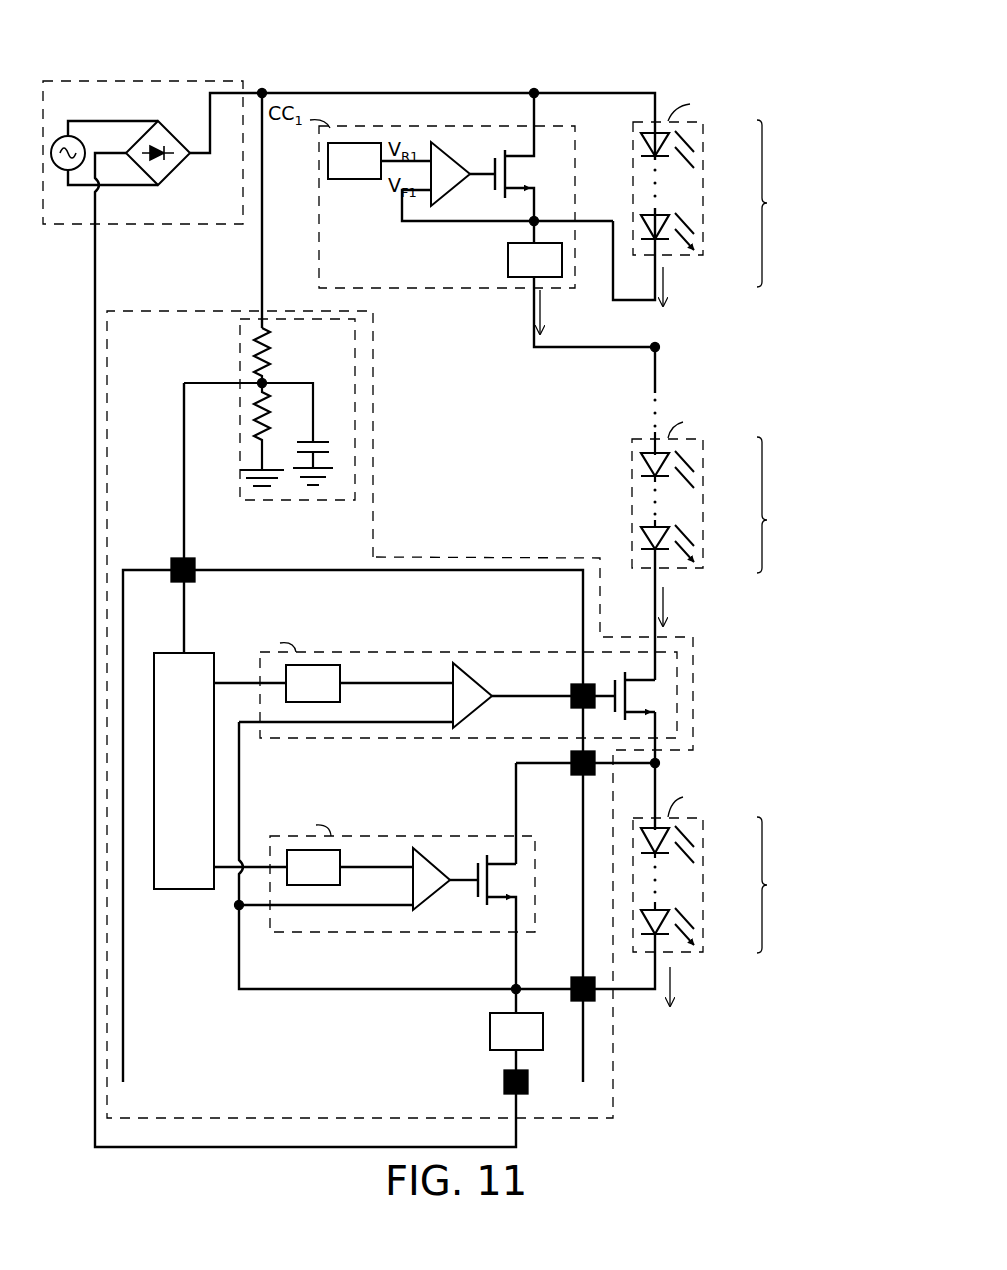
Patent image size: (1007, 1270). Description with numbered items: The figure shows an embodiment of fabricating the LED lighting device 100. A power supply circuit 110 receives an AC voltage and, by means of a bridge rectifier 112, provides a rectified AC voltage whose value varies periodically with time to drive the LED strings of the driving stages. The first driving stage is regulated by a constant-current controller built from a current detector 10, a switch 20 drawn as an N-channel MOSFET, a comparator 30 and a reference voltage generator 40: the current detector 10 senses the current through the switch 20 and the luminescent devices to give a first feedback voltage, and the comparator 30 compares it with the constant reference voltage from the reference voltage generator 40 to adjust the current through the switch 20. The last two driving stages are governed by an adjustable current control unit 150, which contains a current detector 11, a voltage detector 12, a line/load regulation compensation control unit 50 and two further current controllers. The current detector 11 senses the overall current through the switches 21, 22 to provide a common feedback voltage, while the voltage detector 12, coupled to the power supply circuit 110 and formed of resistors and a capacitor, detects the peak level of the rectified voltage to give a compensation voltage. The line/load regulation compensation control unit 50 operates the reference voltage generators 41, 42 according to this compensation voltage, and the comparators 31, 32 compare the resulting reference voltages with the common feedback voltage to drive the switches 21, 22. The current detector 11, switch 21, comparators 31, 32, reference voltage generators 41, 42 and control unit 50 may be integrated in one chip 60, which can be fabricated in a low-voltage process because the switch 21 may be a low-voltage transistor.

The LED lighting device 100 is at (702, 64).
The power supply circuit 110 is at (197, 81).
The bridge rectifier 112 is at (177, 135).
The current detector 10 is at (535, 249).
The current detector 11 is at (516, 1035).
The voltage detector 12 is at (240, 350).
The switch 20 is at (527, 172).
The switch 21 is at (498, 878).
The switch 22 is at (648, 696).
The comparator 30 is at (444, 153).
The comparator 31 is at (427, 861).
The comparator 32 is at (466, 677).
The reference voltage generator 40 is at (354, 161).
The reference voltage generator 41 is at (313, 867).
The reference voltage generator 42 is at (313, 683).
The line/load regulation compensation control unit 50 is at (184, 771).
The chip 60 is at (460, 567).
The adjustable current control unit 150 is at (168, 311).